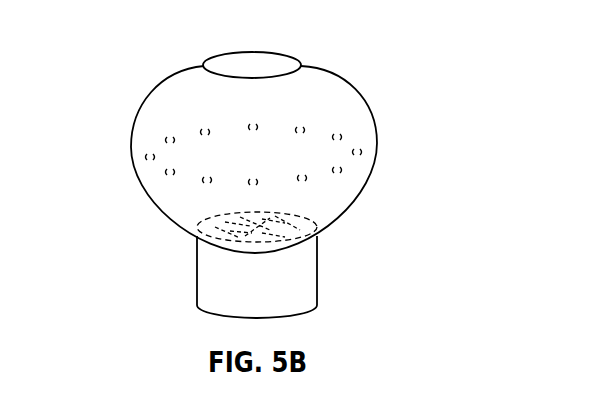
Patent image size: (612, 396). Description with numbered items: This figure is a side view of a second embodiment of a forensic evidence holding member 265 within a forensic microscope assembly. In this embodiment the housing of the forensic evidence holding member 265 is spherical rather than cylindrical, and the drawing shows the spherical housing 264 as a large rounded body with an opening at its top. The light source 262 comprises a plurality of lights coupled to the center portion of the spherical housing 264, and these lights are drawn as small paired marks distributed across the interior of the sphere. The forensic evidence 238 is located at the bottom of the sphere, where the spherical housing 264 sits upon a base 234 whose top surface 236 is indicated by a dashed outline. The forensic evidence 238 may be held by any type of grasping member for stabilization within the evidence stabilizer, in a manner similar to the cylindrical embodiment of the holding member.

The light source 262 is at (365, 152).
The spherical housing 264 is at (283, 52).
The forensic evidence holding member 265 is at (325, 111).
The base 234 is at (277, 296).
The top surface of base 236 is at (294, 232).
The forensic evidence 238 is at (257, 228).